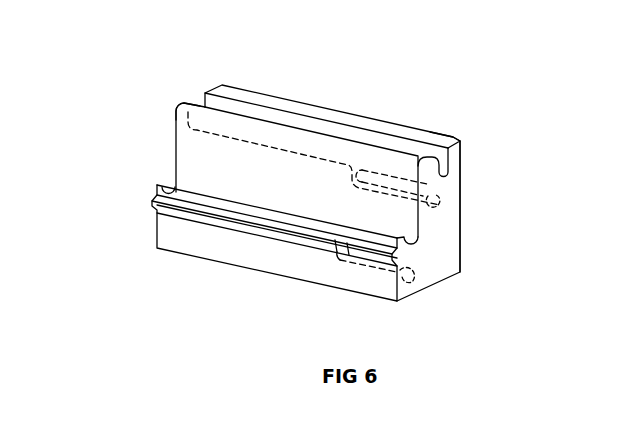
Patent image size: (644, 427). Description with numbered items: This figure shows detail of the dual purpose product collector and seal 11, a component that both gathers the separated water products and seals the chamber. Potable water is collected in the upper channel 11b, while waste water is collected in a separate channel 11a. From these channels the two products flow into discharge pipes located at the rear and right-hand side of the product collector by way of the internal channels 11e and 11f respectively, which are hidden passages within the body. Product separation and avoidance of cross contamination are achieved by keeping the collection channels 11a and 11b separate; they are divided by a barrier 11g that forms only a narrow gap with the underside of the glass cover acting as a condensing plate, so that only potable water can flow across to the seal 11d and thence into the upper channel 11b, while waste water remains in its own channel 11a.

The dual purpose product collector and seal 11 is at (165, 163).
The waste water collection channel 11a is at (420, 242).
The potable water collection channel 11b is at (477, 157).
The seal 11d is at (449, 123).
The internal channel 11e is at (340, 270).
The internal channel 11f is at (382, 171).
The barrier 11g is at (171, 108).